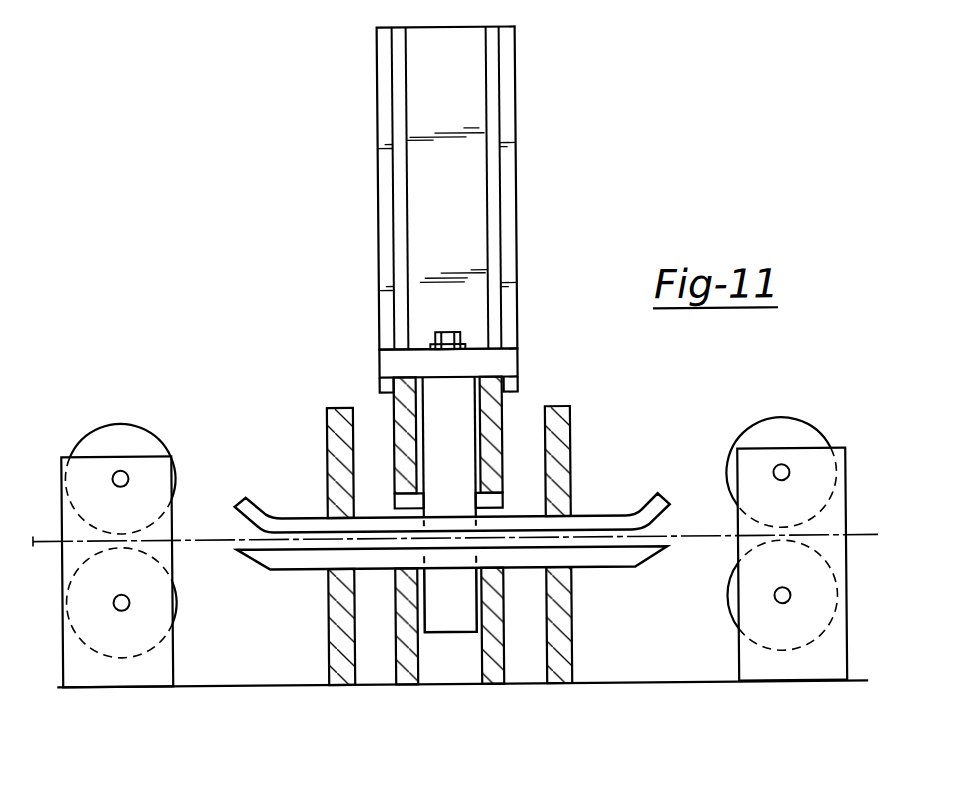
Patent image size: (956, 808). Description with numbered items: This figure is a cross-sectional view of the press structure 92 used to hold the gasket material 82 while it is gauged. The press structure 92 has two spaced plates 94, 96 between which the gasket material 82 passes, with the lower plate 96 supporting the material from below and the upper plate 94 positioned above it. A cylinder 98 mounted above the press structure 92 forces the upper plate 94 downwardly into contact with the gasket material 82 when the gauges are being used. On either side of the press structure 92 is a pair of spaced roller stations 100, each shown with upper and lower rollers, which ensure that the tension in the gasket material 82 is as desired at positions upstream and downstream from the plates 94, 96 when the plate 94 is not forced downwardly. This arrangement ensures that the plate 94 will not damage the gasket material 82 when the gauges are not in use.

The gasket material 82 is at (698, 536).
The press structure 92 is at (280, 442).
The plate 94 is at (642, 512).
The plate 96 is at (626, 560).
The cylinder 98 is at (460, 406).
The roller stations 100 is at (103, 436).